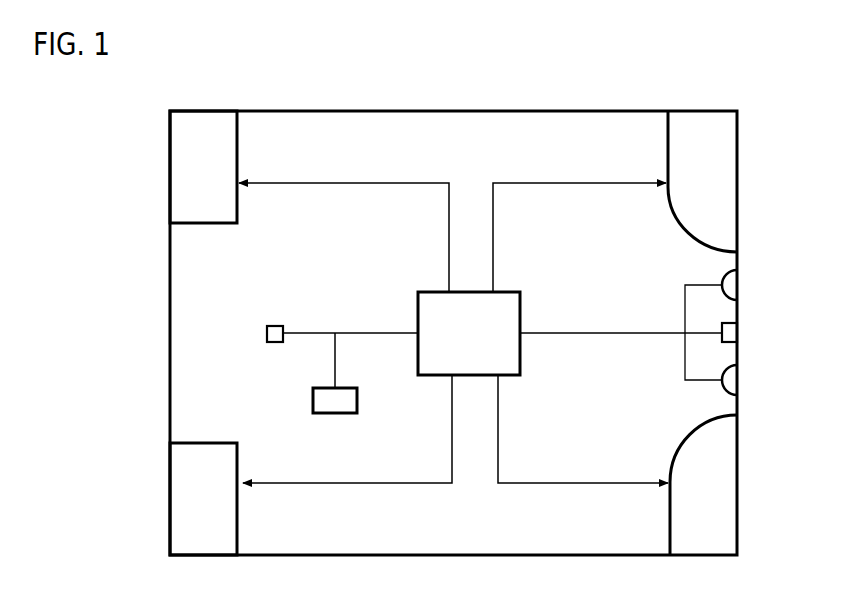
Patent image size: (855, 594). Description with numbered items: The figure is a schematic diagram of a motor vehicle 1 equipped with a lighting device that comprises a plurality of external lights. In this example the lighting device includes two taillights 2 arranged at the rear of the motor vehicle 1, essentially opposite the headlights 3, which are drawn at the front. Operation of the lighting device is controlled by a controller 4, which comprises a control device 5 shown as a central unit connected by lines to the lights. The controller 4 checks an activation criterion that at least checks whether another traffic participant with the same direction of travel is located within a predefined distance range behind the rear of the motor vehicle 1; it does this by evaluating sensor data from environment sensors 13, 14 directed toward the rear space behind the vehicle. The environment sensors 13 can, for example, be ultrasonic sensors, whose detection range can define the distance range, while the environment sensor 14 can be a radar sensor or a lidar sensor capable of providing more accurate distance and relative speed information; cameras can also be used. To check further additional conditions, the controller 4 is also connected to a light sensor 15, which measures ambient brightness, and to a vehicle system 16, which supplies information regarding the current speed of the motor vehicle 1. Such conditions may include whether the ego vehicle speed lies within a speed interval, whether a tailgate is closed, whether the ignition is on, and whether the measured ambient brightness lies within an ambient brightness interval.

The motor vehicle 1 is at (512, 111).
The taillights 2 is at (728, 173).
The headlights 3 is at (203, 168).
The controller 4 is at (534, 387).
The control device 5 is at (520, 292).
The environment sensors 13 is at (736, 285).
The environment sensor 14 is at (736, 330).
The light sensor 15 is at (266, 332).
The vehicle system 16 is at (328, 414).